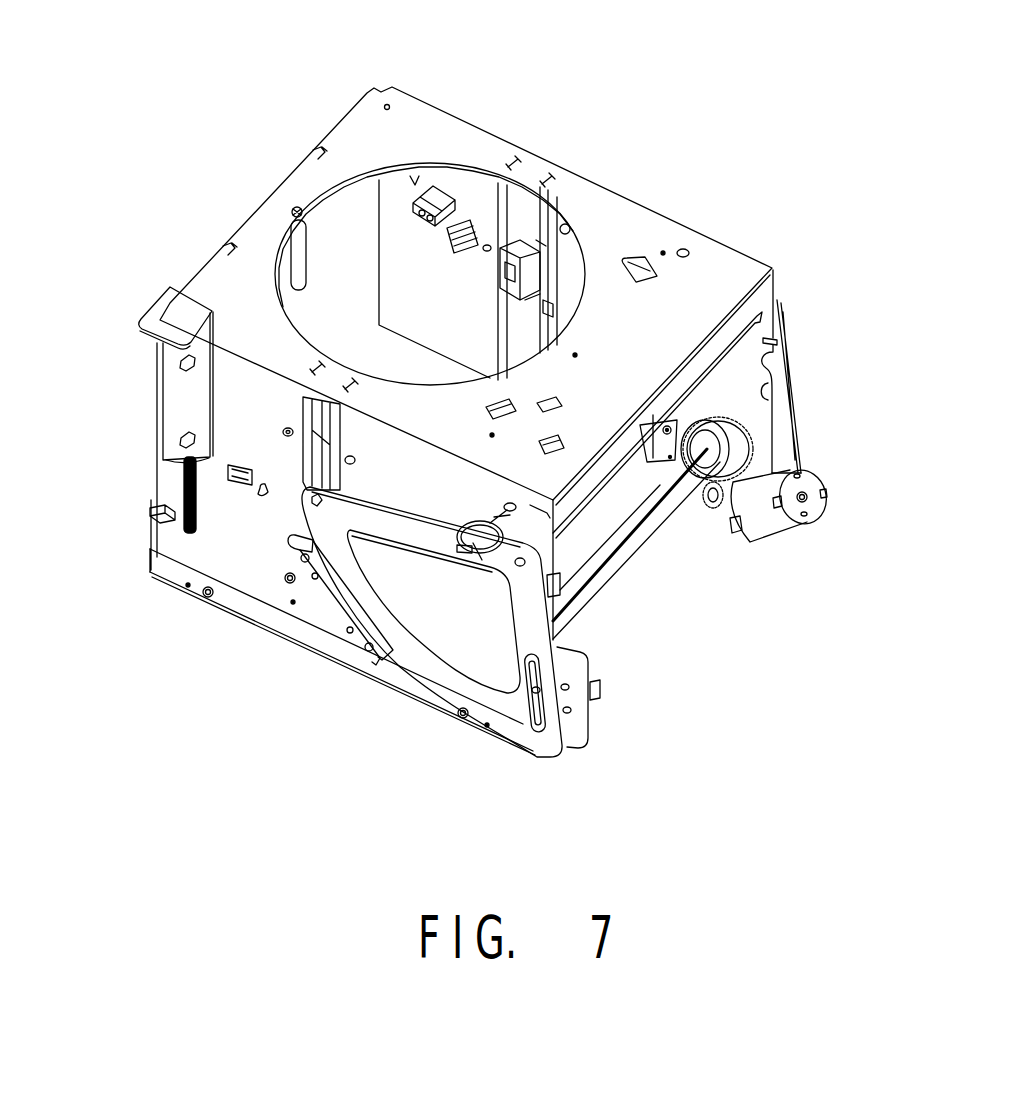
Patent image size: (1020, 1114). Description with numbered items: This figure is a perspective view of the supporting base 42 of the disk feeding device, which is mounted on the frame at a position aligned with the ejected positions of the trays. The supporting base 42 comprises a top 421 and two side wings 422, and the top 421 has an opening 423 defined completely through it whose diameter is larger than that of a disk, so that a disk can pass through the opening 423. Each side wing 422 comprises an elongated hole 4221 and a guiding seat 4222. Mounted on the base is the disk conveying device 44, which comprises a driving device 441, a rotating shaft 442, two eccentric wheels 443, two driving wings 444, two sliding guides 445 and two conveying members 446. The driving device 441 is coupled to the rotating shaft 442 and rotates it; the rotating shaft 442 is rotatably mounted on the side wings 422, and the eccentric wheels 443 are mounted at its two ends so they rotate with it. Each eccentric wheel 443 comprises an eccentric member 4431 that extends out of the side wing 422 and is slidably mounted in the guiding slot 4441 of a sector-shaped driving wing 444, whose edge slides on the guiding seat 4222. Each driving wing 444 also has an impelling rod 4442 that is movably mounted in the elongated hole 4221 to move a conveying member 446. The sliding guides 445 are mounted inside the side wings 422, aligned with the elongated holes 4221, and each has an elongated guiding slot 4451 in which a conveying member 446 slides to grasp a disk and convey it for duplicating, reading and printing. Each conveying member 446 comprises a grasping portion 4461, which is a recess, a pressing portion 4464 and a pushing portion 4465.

The supporting base 42 is at (804, 330).
The top 421 is at (723, 270).
The side wings 422 is at (770, 399).
The opening 423 is at (413, 180).
The elongated hole 4221 is at (303, 402).
The guiding seat 4222 is at (290, 560).
The disk conveying device 44 is at (290, 514).
The driving device 441 is at (781, 549).
The rotating shaft 442 is at (633, 550).
The eccentric wheels 443 is at (748, 432).
The driving wings 444 is at (508, 717).
The guiding slot 4441 is at (535, 687).
The eccentric member 4431 is at (583, 717).
The impelling rod 4442 is at (540, 244).
The sliding guides 445 is at (513, 307).
The conveying members 446 is at (497, 238).
The elongated guiding slot 4451 is at (537, 293).
The grasping portion 4461 is at (503, 267).
The pressing portion 4464 is at (513, 243).
The pushing portion 4465 is at (563, 253).